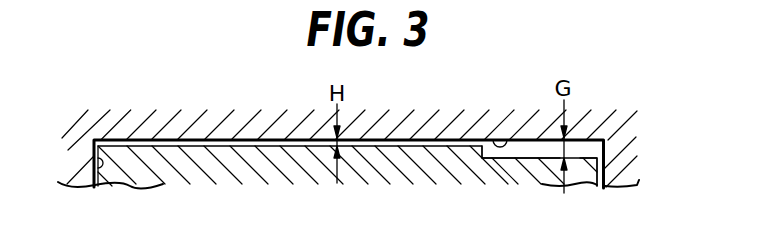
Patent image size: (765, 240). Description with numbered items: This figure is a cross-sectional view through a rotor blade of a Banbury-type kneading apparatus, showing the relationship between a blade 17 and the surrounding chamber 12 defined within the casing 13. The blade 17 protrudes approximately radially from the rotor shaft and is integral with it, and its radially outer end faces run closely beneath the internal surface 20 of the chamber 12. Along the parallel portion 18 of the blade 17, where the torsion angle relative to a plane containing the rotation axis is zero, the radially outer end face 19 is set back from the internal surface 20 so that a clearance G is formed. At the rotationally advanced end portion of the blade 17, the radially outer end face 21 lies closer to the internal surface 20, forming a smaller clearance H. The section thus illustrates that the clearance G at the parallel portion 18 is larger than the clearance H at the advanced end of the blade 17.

The chamber 12 is at (92, 157).
The casing 13 is at (410, 128).
The blade 17 is at (243, 164).
The parallel portion 18 is at (510, 163).
The radially outer end face 19 is at (593, 157).
The internal surface 20 is at (507, 138).
The radially outer end face 21 is at (227, 140).